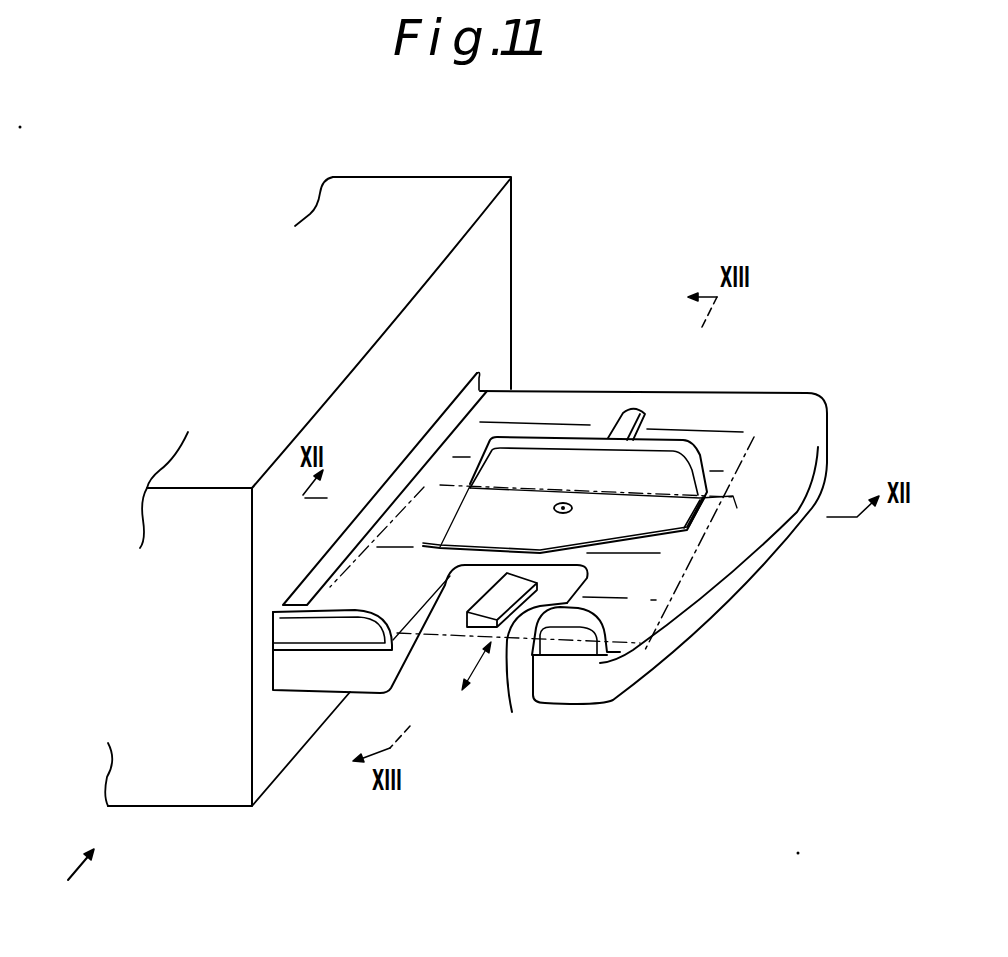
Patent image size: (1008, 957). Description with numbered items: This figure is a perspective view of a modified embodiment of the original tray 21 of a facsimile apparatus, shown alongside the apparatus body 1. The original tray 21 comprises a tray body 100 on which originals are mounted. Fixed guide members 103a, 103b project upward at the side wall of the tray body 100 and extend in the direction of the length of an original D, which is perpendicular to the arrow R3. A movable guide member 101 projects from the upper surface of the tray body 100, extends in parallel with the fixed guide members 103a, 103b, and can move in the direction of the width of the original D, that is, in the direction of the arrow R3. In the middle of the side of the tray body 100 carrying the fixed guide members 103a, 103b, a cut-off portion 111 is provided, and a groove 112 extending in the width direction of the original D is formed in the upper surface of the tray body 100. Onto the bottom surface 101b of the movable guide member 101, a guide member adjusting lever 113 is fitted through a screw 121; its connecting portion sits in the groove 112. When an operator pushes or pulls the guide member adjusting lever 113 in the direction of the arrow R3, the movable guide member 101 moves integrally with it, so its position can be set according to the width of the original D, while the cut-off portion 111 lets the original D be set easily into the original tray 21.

The apparatus housing 1 is at (452, 173).
The tray body 100 is at (764, 403).
The original tray 21 is at (725, 388).
The movable guide member 101 is at (578, 447).
The bottom surface of the movable guide member 101b is at (697, 513).
The groove 112 is at (631, 411).
The screw 121 is at (552, 507).
The guide member adjusting lever 113 is at (463, 624).
The cut-off portion 111 is at (532, 679).
The fixed guide member 103a is at (340, 637).
The fixed guide member 103b is at (583, 645).
The original D is at (705, 528).
The arrow R3 is at (469, 681).